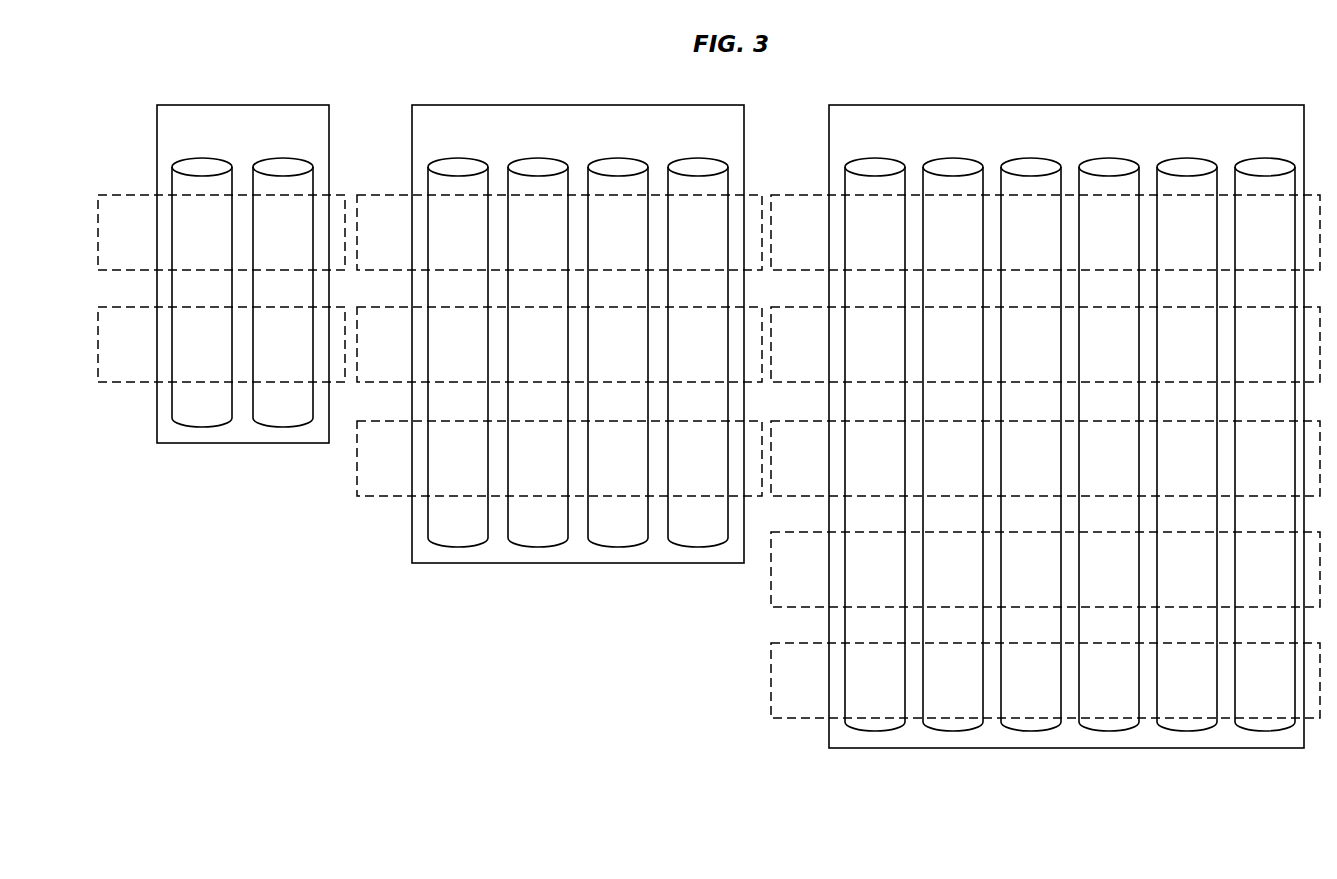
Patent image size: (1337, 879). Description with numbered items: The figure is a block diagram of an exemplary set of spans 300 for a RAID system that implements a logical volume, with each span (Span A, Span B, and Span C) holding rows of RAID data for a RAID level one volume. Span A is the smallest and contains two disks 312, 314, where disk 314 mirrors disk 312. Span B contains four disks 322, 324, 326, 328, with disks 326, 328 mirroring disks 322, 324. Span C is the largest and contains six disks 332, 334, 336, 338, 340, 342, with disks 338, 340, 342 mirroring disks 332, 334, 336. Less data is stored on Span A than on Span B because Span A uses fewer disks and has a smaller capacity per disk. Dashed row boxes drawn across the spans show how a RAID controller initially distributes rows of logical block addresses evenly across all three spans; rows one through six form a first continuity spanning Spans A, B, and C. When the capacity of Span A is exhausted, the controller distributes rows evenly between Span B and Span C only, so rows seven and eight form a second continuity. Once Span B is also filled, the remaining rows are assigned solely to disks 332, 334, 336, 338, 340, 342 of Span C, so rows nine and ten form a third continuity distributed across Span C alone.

The storage drive group layout 300 is at (274, 681).
The disk 312 is at (205, 427).
The disk 314 is at (284, 427).
The disk 322 is at (457, 547).
The disk 324 is at (538, 547).
The disk 326 is at (620, 547).
The disk 328 is at (700, 547).
The disk 332 is at (875, 731).
The disk 334 is at (954, 731).
The disk 336 is at (1032, 731).
The disk 338 is at (1108, 731).
The disk 340 is at (1187, 731).
The disk 342 is at (1263, 731).